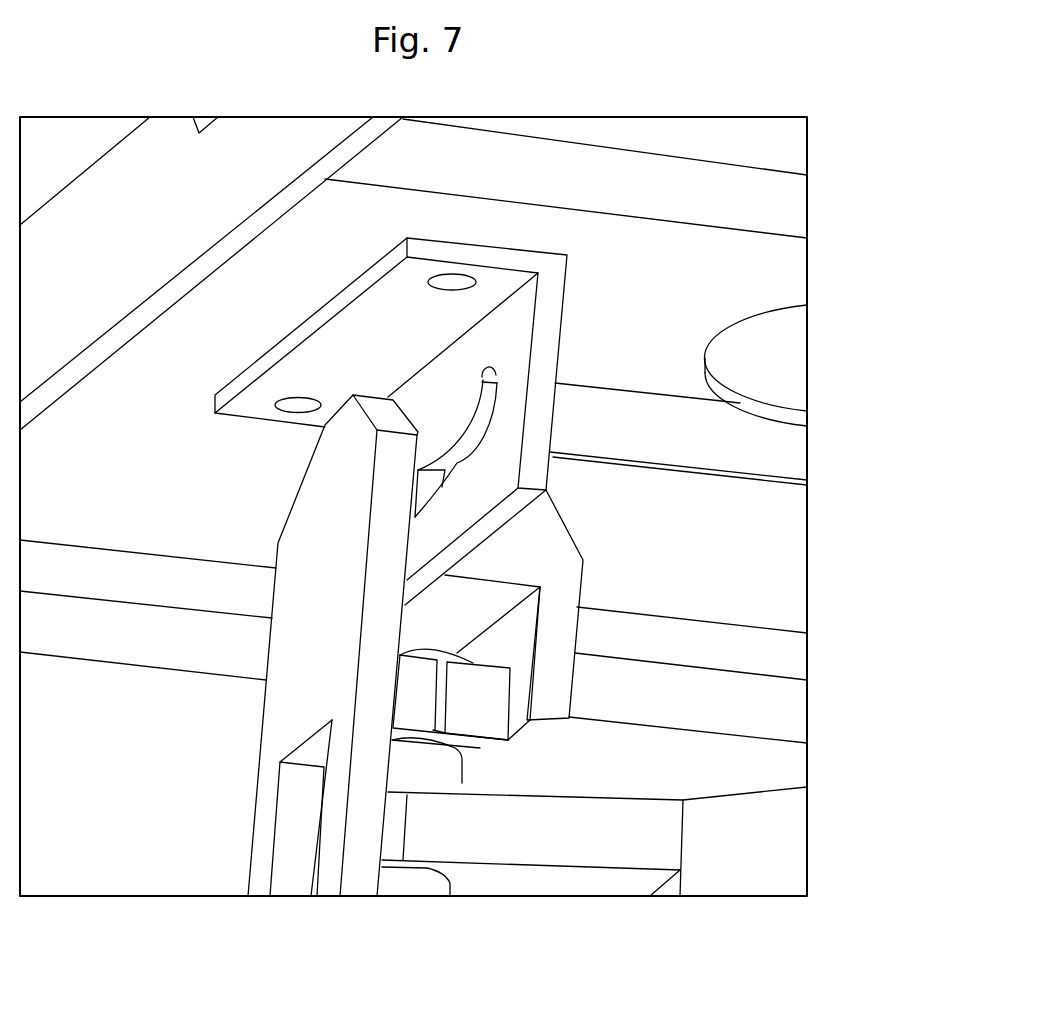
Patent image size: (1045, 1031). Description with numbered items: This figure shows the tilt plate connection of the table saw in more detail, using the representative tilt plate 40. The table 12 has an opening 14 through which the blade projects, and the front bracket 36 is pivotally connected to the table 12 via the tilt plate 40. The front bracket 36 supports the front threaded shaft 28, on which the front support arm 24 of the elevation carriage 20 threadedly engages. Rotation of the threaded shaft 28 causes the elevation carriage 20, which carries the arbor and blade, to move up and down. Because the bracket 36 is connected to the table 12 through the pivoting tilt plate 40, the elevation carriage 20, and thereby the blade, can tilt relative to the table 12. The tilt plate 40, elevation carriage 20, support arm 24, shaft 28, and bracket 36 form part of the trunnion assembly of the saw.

The table 12 is at (83, 237).
The opening 14 is at (762, 402).
The elevation carriage 20 is at (763, 840).
The front support arm 24 is at (567, 822).
The front threaded shaft 28 is at (437, 783).
The front bracket 36 is at (293, 707).
The tilt plate 40 is at (555, 318).